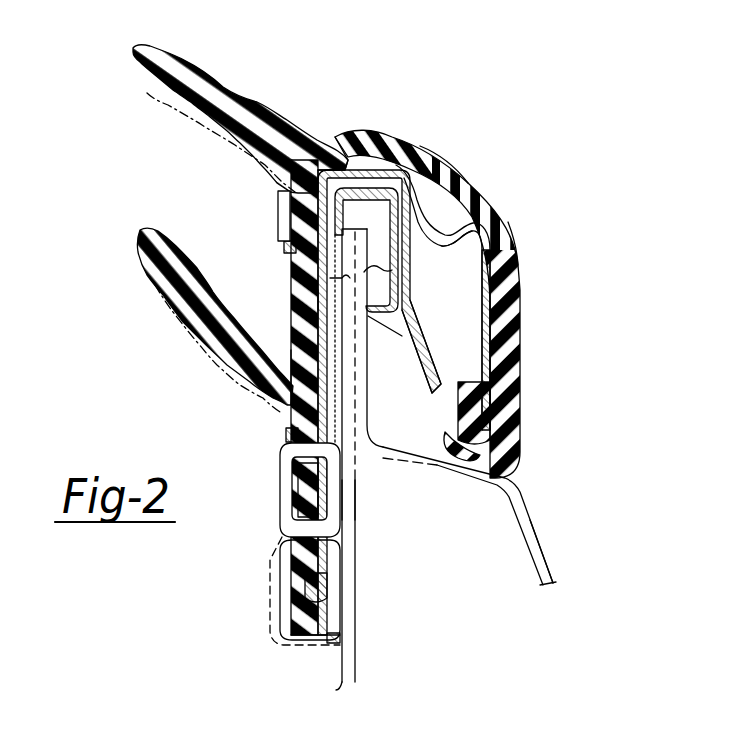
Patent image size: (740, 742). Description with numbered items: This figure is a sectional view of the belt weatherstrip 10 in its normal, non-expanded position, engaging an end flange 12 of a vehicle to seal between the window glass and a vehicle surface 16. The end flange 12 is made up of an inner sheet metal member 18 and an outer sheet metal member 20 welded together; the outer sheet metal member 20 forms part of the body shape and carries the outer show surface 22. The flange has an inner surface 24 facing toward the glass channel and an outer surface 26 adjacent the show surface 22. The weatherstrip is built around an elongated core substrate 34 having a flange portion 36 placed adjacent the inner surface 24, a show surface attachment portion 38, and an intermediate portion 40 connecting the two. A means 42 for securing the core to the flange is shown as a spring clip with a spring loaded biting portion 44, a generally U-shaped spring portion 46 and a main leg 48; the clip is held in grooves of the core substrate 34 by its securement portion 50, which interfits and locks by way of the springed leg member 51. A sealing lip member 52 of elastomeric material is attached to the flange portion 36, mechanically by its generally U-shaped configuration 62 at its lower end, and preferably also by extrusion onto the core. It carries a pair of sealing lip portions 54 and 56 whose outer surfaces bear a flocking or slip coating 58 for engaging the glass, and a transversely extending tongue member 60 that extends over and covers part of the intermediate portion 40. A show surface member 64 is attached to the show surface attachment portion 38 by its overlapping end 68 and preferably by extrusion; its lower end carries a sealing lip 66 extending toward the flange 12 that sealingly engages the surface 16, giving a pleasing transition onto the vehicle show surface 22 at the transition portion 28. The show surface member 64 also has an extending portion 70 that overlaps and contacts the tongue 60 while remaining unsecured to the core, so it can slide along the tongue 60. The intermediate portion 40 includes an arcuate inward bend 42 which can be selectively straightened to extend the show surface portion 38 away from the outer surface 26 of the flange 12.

The belt weatherstrip 10 is at (363, 113).
The end flange 12 is at (352, 208).
The vehicle surface 16 is at (420, 450).
The inner sheet metal member 18 is at (330, 279).
The outer sheet metal member 20 is at (388, 270).
The outer show surface 22 is at (545, 576).
The inner surface 24 is at (315, 301).
The outer surface 26 is at (368, 383).
The transition portion 28 is at (520, 486).
The elongated core substrate 34 is at (313, 137).
The flange portion 36 is at (285, 415).
The show surface attachment portion 38 is at (512, 327).
The intermediate portion 40 is at (440, 228).
The means for securing 42 is at (490, 197).
The spring loaded biting portion 44 is at (413, 318).
The U shaped spring portion 46 is at (362, 190).
The main leg 48 is at (356, 500).
The securement portion 50 is at (288, 489).
The springed leg member 51 is at (290, 453).
The sealing lip member 52 is at (290, 198).
The sealing lip portion 54 is at (178, 76).
The sealing lip portion 56 is at (187, 259).
The flocking or slip coating 58 is at (282, 436).
The tongue member 60 is at (342, 151).
The U shaped configuration 62 is at (302, 626).
The show surface member 64 is at (512, 256).
The sealing lip 66 is at (460, 456).
The overlapping end 68 is at (474, 383).
The extending portion 70 is at (430, 156).